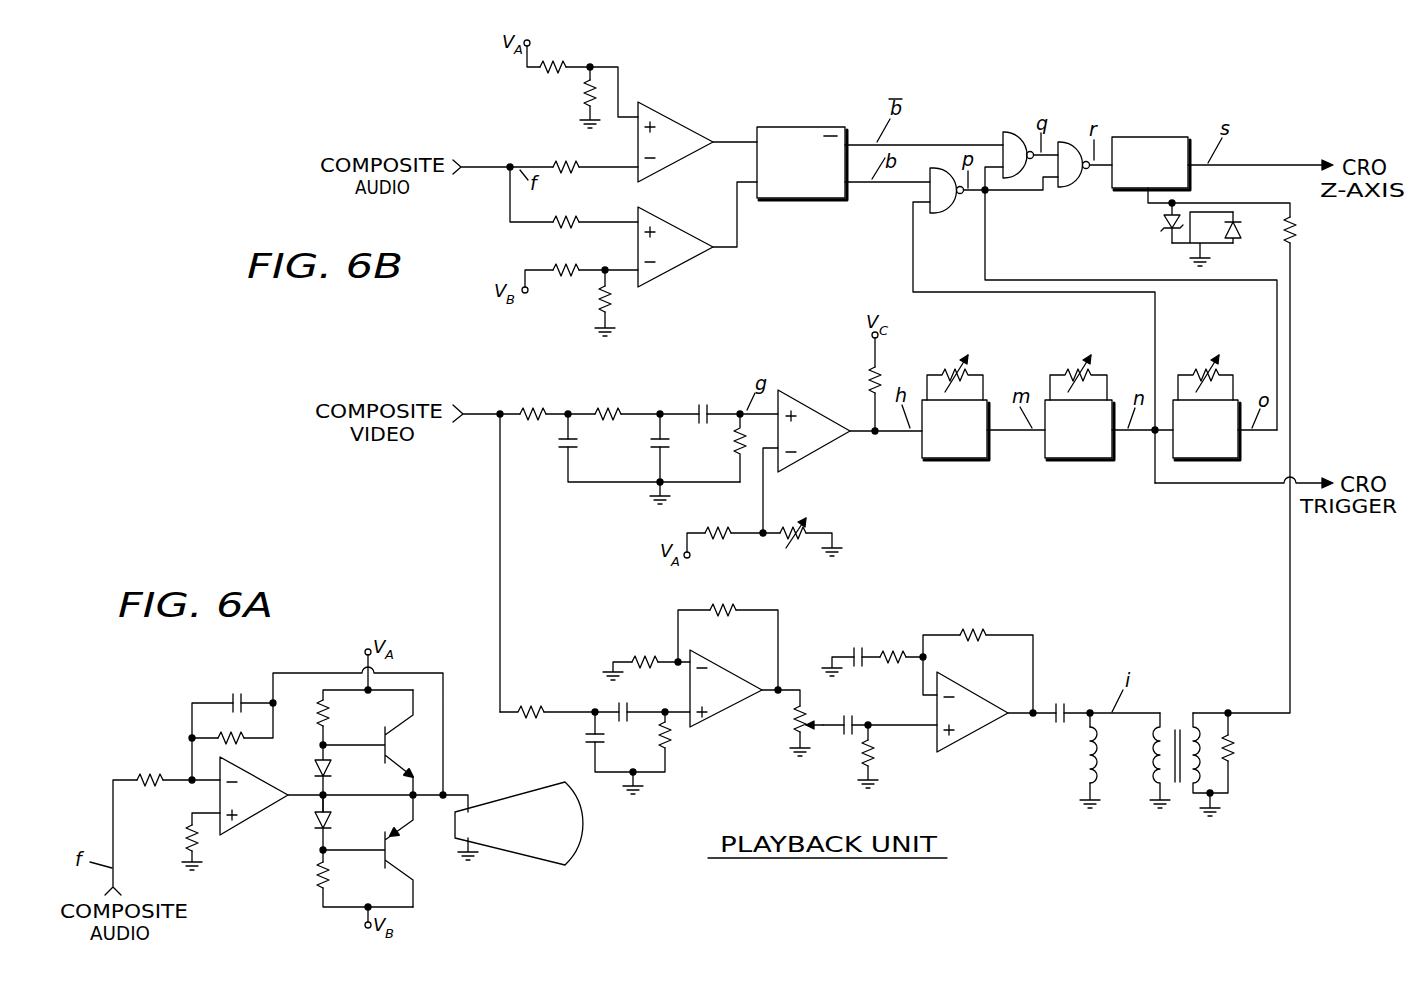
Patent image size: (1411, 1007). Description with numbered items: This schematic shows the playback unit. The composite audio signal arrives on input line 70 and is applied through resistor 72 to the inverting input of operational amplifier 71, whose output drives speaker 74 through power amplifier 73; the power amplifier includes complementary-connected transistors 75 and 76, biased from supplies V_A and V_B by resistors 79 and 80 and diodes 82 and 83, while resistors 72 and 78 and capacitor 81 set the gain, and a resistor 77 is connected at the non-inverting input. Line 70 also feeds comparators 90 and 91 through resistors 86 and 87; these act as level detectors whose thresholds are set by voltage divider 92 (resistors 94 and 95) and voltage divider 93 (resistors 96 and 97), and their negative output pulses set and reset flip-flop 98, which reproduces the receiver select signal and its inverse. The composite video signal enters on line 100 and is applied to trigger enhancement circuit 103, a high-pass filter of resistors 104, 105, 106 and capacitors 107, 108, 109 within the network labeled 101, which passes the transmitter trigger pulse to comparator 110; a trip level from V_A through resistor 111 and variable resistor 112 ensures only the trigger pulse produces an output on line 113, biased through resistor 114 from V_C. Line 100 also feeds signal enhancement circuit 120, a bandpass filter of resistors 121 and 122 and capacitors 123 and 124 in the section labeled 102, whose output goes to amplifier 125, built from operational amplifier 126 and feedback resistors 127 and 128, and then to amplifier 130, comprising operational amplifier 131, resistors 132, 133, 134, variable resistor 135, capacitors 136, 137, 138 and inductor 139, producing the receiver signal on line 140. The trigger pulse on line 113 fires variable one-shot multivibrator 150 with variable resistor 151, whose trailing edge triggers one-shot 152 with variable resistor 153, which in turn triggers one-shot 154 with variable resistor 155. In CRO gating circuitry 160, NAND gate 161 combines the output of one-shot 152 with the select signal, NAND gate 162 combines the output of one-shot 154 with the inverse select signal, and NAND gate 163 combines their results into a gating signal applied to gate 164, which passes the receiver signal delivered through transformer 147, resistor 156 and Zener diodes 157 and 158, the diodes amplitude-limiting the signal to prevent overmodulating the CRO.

In FIG. 6B, the input line 70 is at (494, 165).
In FIG. 6A, the input line 70 is at (112, 800).
In FIG. 6A, the operational amplifier 71 is at (242, 826).
In FIG. 6A, the resistor 72 is at (145, 773).
In FIG. 6A, the power amplifier 73 is at (355, 798).
In FIG. 6A, the speaker 74 is at (523, 853).
In FIG. 6A, the transistor 75 is at (398, 746).
In FIG. 6A, the transistor 76 is at (397, 853).
In FIG. 6A, the resistor 77 is at (183, 844).
In FIG. 6A, the resistor 78 is at (235, 746).
In FIG. 6A, the resistor 79 is at (329, 711).
In FIG. 6A, the resistor 80 is at (312, 877).
In FIG. 6A, the capacitor 81 is at (231, 693).
In FIG. 6A, the diode 82 is at (317, 762).
In FIG. 6A, the diode 83 is at (316, 819).
In FIG. 6B, the resistor 86 is at (573, 175).
In FIG. 6B, the resistor 87 is at (572, 229).
In FIG. 6B, the comparator 90 is at (663, 110).
In FIG. 6B, the comparator 91 is at (670, 218).
In FIG. 6B, the voltage divider 92 is at (606, 105).
In FIG. 6B, the voltage divider 93 is at (608, 251).
In FIG. 6B, the resistor 94 is at (565, 61).
In FIG. 6B, the resistor 95 is at (579, 99).
In FIG. 6B, the resistor 96 is at (567, 262).
In FIG. 6B, the resistor 97 is at (613, 303).
In FIG. 6B, the flip-flop 98 is at (795, 122).
In FIG. 6A, the line 100 is at (483, 410).
In FIG. 6A, the filter network 101 is at (646, 440).
In FIG. 6A, the audio amplifier section 102 is at (655, 672).
In FIG. 6A, the trigger enhancement circuit 103 is at (609, 423).
In FIG. 6A, the resistor 104 is at (538, 405).
In FIG. 6A, the resistor 105 is at (609, 406).
In FIG. 6A, the resistor 106 is at (736, 446).
In FIG. 6A, the capacitor 107 is at (553, 445).
In FIG. 6A, the capacitor 108 is at (673, 443).
In FIG. 6A, the capacitor 109 is at (700, 404).
In FIG. 6A, the comparator 110 is at (813, 456).
In FIG. 6A, the resistor 111 is at (713, 527).
In FIG. 6A, the variable resistor 112 is at (790, 527).
In FIG. 6A, the line 113 is at (888, 433).
In FIG. 6A, the resistor 114 is at (868, 386).
In FIG. 6A, the signal enhancement circuit 120 is at (630, 729).
In FIG. 6A, the resistor 121 is at (530, 701).
In FIG. 6A, the resistor 122 is at (675, 741).
In FIG. 6A, the capacitor 123 is at (583, 741).
In FIG. 6A, the capacitor 124 is at (628, 703).
In FIG. 6A, the amplifier 125 is at (706, 660).
In FIG. 6A, the operational amplifier 126 is at (725, 666).
In FIG. 6A, the feedback resistor 127 is at (643, 651).
In FIG. 6A, the feedback resistor 128 is at (725, 604).
In FIG. 6A, the amplifier 130 is at (937, 680).
In FIG. 6A, the operational amplifier 131 is at (974, 691).
In FIG. 6A, the resistor 132 is at (888, 648).
In FIG. 6A, the resistor 133 is at (881, 756).
In FIG. 6A, the resistor 134 is at (974, 628).
In FIG. 6A, the variable resistor 135 is at (788, 728).
In FIG. 6A, the capacitor 136 is at (851, 713).
In FIG. 6A, the capacitor 137 is at (857, 645).
In FIG. 6A, the capacitor 138 is at (1063, 701).
In FIG. 6A, the inductor 139 is at (1080, 752).
In FIG. 6A, the line 140 is at (1142, 716).
In FIG. 6A, the transformer 147 is at (1175, 746).
In FIG. 6A, the variable one-shot multivibrator 150 is at (977, 461).
In FIG. 6A, the variable resistor 151 is at (953, 367).
In FIG. 6A, the variable one-shot multivibrator 152 is at (1080, 461).
In FIG. 6A, the variable resistor 153 is at (1074, 367).
In FIG. 6A, the variable one-shot multivibrator 154 is at (1243, 444).
In FIG. 6A, the variable resistor 155 is at (1203, 367).
In FIG. 6B, the resistor 156 is at (1297, 233).
In FIG. 6B, the Zener diode 157 is at (1163, 229).
In FIG. 6B, the Zener diode 158 is at (1245, 232).
In FIG. 6B, the CRO gating circuitry 160 is at (1021, 163).
In FIG. 6B, the NAND gate 161 is at (945, 213).
In FIG. 6B, the NAND gate 162 is at (1013, 132).
In FIG. 6B, the NAND gate 163 is at (1070, 141).
In FIG. 6B, the gate 164 is at (1142, 137).